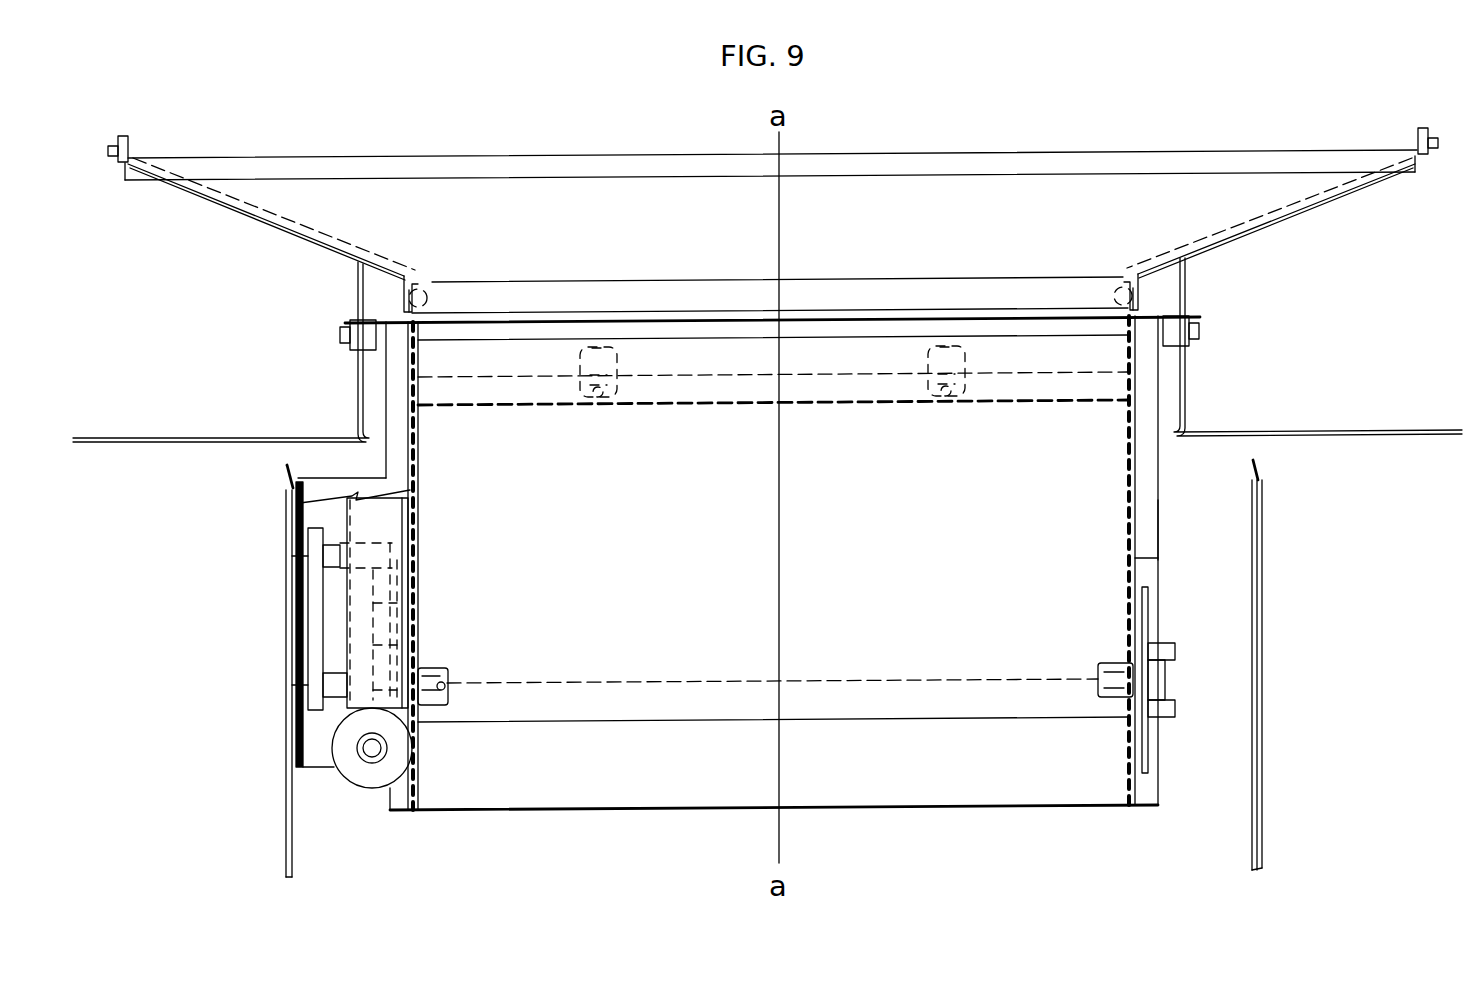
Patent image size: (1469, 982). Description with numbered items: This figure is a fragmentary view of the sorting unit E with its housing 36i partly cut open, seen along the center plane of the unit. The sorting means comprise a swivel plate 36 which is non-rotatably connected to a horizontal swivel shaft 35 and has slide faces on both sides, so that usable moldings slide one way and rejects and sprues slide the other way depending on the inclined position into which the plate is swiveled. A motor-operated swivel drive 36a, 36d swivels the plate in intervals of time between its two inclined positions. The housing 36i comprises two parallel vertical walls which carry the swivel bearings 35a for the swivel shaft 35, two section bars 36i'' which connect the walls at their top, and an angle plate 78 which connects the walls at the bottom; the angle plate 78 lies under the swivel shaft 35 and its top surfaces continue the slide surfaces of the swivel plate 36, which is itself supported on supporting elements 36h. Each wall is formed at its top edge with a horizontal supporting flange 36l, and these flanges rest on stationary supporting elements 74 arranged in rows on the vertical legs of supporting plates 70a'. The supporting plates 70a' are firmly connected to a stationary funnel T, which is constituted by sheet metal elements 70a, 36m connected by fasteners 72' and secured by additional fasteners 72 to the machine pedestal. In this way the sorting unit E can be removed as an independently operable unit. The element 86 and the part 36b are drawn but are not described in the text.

The stationary funnel T is at (467, 168).
The sheet metal element 36m is at (1180, 200).
The fastener 72 is at (771, 105).
The sheet metal element 70a is at (771, 232).
The fastener 72' is at (771, 253).
The supporting plate 70a' is at (767, 350).
The supporting flange 36l is at (374, 336).
The supporting element 74 is at (366, 330).
The swivel plate 36 is at (742, 606).
The supporting element 36h is at (597, 345).
The section bar 36i'' is at (773, 439).
The swivel shaft 35 is at (874, 680).
The angle plate 78 is at (865, 771).
The swivel bearing 35a is at (434, 668).
The swivel drive 36a is at (372, 748).
The housing 36i is at (850, 661).
The sorting unit E is at (1168, 522).
The guide plate 86 is at (300, 482).
The swivel drive 36d is at (318, 628).
The block 36b is at (335, 556).